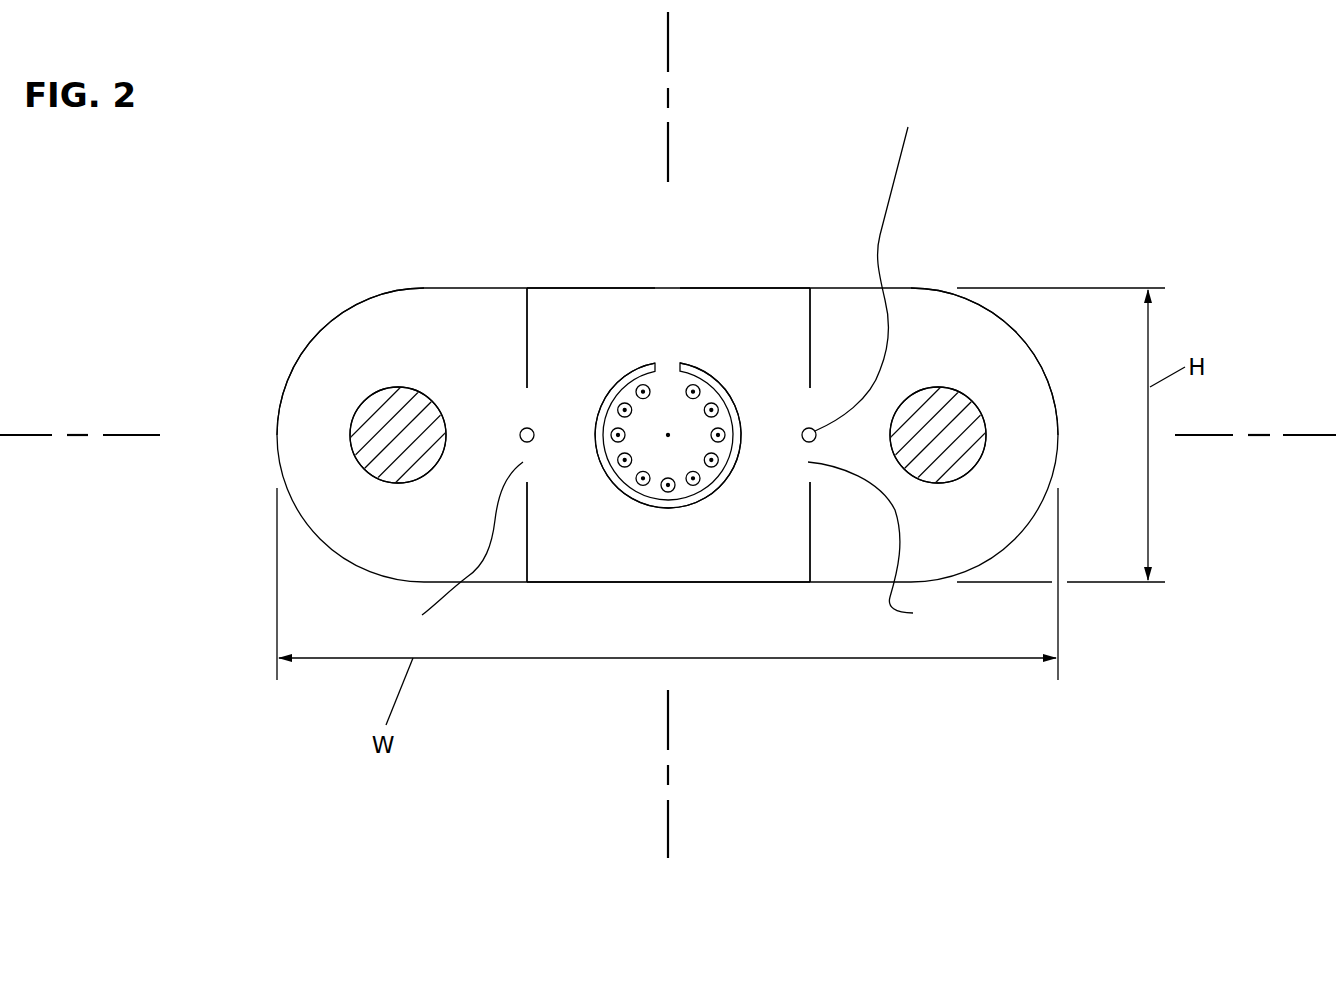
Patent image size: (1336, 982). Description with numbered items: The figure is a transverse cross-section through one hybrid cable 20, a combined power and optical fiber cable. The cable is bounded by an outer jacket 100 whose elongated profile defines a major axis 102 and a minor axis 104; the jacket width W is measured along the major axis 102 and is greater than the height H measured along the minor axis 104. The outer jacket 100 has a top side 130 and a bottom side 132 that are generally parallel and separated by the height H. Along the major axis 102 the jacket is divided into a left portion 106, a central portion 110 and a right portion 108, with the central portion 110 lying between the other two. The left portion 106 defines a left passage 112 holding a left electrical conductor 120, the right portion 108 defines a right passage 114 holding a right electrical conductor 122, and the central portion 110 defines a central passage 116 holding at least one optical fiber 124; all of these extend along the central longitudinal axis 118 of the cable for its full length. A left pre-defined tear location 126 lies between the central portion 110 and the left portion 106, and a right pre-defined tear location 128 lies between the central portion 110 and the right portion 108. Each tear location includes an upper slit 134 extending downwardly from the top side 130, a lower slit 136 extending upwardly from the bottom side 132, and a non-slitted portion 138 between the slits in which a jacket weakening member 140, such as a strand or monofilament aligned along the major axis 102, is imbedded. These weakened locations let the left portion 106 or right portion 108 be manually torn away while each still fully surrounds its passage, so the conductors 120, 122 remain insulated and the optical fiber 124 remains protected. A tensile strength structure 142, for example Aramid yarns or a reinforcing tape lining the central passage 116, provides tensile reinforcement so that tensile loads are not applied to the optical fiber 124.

The hybrid cable 20 is at (667, 312).
The outer jacket 100 is at (900, 284).
The major axis 102 is at (17, 437).
The minor axis 104 is at (670, 822).
The left portion 106 is at (345, 312).
The right portion 108 is at (927, 287).
The central portion 110 is at (718, 288).
The left passage 112 is at (409, 390).
The right passage 114 is at (957, 388).
The central passage 116 is at (700, 370).
The central longitudinal axis 118 is at (668, 437).
The left electrical conductor 120 is at (407, 468).
The right electrical conductor 122 is at (947, 472).
The optical fiber 124 is at (696, 482).
The left pre-defined tear location 126 is at (526, 285).
The right pre-defined tear location 128 is at (811, 285).
The top side 130 is at (605, 288).
The bottom side 132 is at (712, 582).
The upper slit 134 is at (527, 342).
The lower slit 136 is at (527, 530).
The non-slitted portion 138 is at (667, 547).
The jacket weakening member 140 is at (522, 428).
The tensile strength structure 142 is at (625, 380).